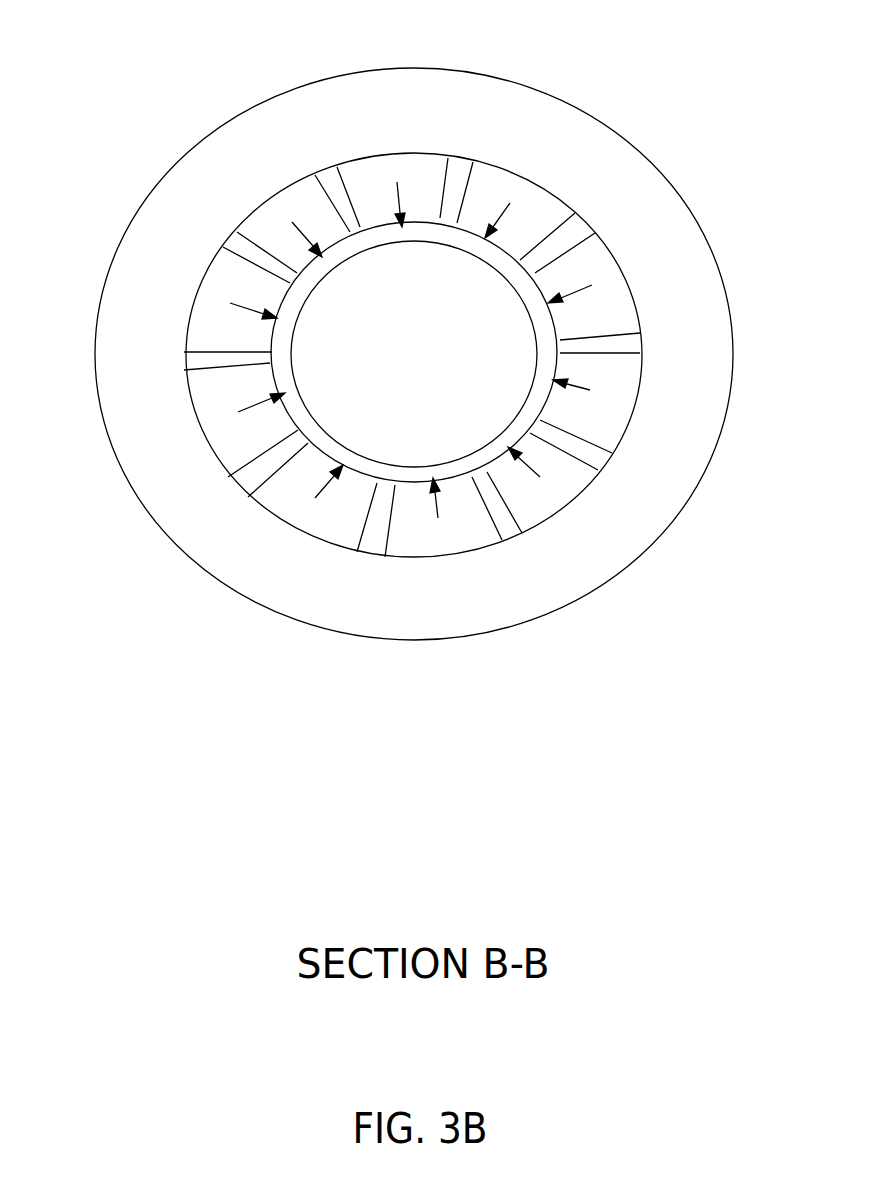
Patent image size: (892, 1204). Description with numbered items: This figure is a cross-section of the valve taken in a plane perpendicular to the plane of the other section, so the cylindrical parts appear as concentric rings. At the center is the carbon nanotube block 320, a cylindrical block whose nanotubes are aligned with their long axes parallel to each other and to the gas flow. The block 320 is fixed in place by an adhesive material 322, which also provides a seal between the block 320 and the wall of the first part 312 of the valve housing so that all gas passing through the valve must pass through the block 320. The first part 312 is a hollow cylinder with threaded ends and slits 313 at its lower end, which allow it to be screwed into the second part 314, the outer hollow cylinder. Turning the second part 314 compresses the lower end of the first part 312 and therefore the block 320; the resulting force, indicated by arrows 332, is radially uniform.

The first part 312 is at (605, 300).
The slits 313 is at (502, 513).
The second part 314 is at (580, 147).
The carbon nanotube block 320 is at (395, 322).
The adhesive material 322 is at (517, 432).
The arrows 332 is at (328, 480).